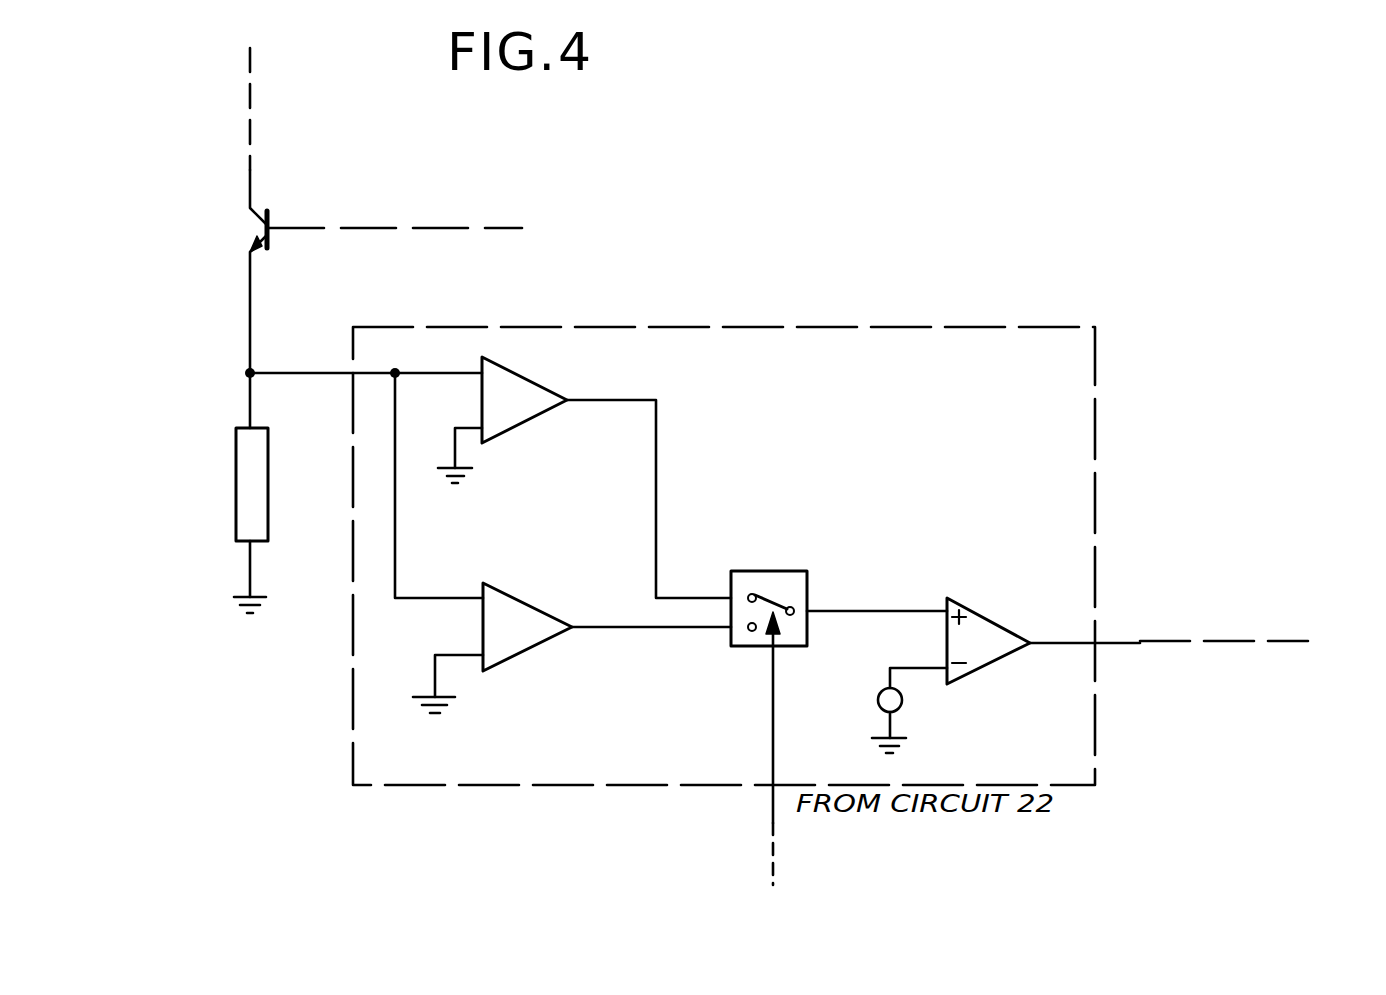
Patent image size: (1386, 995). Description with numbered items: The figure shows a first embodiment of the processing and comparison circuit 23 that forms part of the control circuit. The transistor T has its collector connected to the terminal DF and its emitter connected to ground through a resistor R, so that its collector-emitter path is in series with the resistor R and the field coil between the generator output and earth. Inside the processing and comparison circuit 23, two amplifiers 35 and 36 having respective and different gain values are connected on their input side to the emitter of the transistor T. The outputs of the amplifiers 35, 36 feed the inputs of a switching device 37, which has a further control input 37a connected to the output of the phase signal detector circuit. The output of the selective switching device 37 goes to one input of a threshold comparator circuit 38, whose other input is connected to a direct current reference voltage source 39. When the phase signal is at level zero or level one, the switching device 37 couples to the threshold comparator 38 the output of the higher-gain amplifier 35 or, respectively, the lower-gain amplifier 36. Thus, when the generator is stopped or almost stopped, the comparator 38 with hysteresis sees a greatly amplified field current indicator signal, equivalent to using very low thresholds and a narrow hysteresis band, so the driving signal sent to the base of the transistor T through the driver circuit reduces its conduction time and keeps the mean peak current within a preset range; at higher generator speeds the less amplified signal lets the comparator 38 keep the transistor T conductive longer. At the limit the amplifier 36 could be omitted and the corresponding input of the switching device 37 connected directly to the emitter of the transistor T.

The transistor T is at (268, 226).
The resistor R is at (248, 485).
The processing and comparison circuit 23 is at (818, 326).
The amplifier 35 is at (530, 400).
The amplifier 36 is at (506, 602).
The switching device 37 is at (779, 579).
The control input 37a is at (769, 649).
The threshold comparator circuit 38 is at (982, 628).
The direct current reference voltage source 39 is at (902, 704).